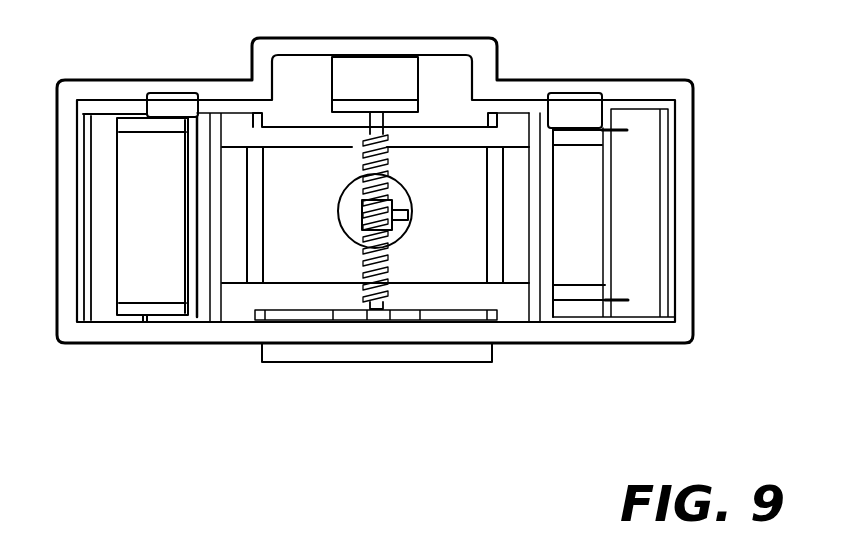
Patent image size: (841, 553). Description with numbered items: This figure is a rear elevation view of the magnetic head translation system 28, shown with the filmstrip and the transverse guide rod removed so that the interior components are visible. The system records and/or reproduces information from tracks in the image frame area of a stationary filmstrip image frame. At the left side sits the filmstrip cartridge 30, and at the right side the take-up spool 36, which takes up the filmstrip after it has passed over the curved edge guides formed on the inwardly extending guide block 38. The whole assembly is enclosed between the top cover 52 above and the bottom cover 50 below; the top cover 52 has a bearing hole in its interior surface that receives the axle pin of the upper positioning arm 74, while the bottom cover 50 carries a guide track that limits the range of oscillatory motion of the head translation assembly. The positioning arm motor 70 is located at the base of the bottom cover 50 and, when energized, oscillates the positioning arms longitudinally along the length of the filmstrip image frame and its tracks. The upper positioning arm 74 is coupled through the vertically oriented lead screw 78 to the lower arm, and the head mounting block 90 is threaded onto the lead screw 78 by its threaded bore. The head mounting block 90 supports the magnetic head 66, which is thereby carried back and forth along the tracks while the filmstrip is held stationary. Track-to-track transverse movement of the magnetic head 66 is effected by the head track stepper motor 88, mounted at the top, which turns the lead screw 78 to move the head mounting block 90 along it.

The magnetic head translation system 28 is at (707, 152).
The filmstrip cartridge 30 is at (172, 236).
The take-up spool 36 is at (582, 110).
The guide block 38 is at (237, 125).
The bottom cover 50 is at (633, 343).
The top cover 52 is at (670, 80).
The magnetic head 66 is at (402, 216).
The positioning arm motor 70 is at (465, 362).
The upper positioning arm 74 is at (345, 107).
The lead screw 78 is at (362, 160).
The head track stepper motor 88 is at (403, 72).
The head mounting block 90 is at (352, 225).